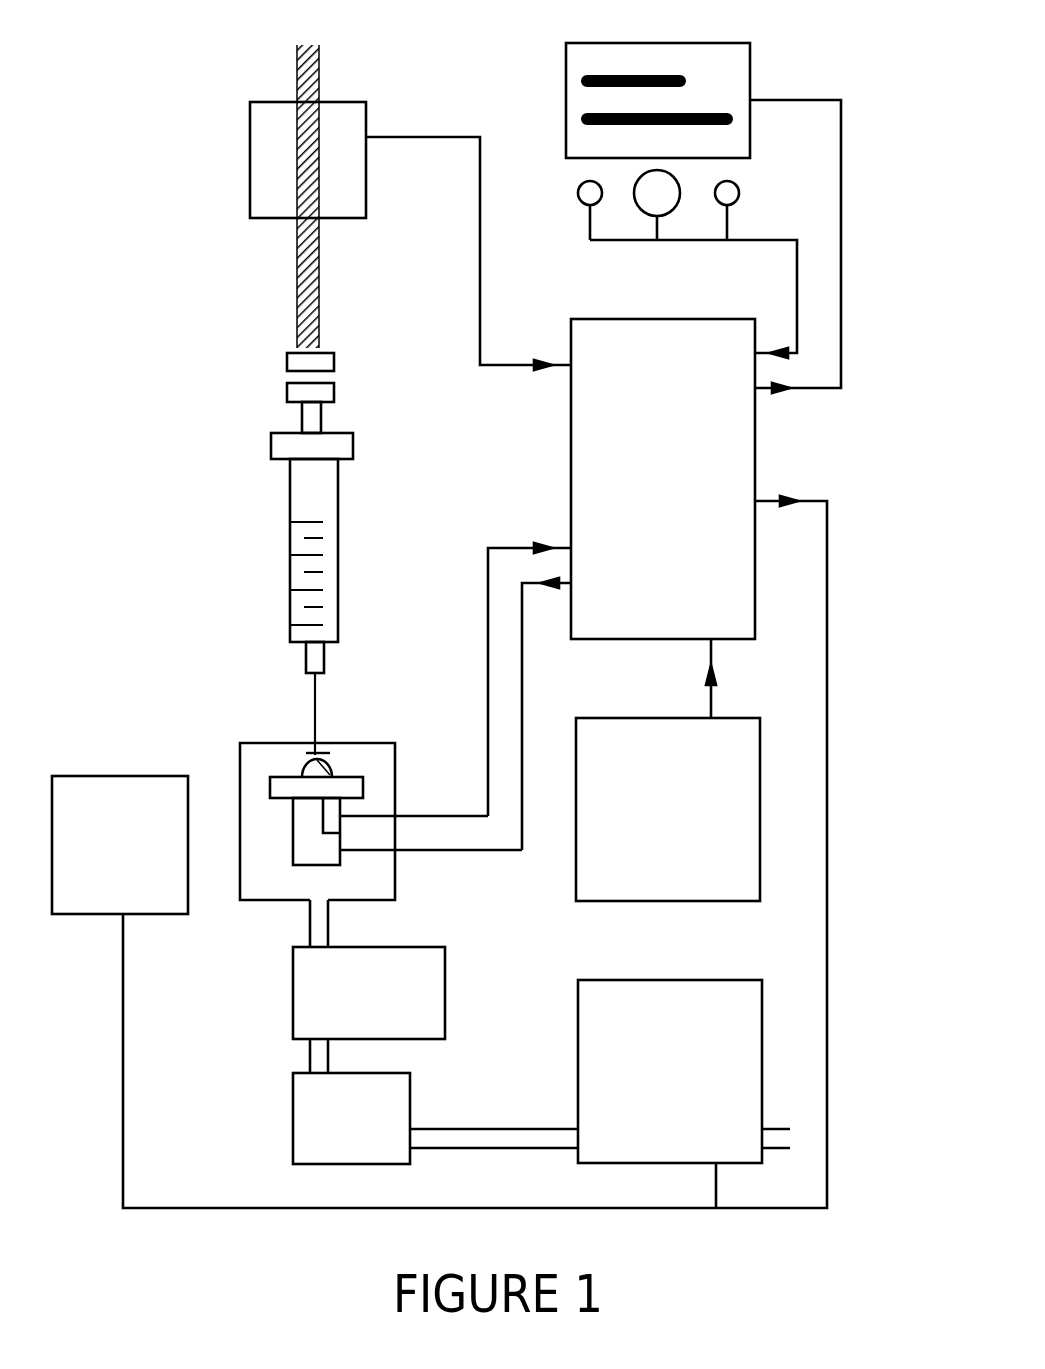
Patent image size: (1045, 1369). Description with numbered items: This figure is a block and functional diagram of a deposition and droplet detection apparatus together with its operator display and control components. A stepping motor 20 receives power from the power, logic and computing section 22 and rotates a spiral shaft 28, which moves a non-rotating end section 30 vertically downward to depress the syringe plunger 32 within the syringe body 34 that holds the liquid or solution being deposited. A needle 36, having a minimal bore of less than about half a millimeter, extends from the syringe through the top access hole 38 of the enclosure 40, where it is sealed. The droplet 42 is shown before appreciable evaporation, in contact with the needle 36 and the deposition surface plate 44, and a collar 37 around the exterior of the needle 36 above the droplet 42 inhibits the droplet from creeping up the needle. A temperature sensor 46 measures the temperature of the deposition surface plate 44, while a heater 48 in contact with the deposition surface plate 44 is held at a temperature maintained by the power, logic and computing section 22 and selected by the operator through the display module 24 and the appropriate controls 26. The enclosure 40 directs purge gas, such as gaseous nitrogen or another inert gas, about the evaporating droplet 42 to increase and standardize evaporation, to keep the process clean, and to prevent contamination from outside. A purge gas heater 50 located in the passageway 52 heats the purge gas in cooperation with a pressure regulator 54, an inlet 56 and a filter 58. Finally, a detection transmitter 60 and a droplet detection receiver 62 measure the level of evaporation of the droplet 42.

The stepping motor 20 is at (248, 142).
The power, logic and computing section 22 is at (758, 448).
The display module 24 is at (750, 47).
The controls 26 is at (770, 182).
The spiral shaft 28 is at (298, 270).
The non-rotating end section 30 is at (285, 353).
The syringe plunger 32 is at (285, 385).
The syringe body 34 is at (287, 558).
The needle 36 is at (313, 697).
The collar 37 is at (340, 745).
The top access hole 38 is at (303, 740).
The enclosure 40 is at (260, 903).
The droplet 42 is at (303, 757).
The deposition surface plate 44 is at (268, 772).
The temperature sensor 46 is at (344, 820).
The heater 48 is at (322, 868).
The purge gas heater 50 is at (290, 1013).
The passageway 52 is at (510, 1125).
The pressure regulator 54 is at (762, 1017).
The inlet 56 is at (790, 1133).
The filter 58 is at (293, 1140).
The detection transmitter 60 is at (85, 918).
The droplet detection receiver 62 is at (762, 820).